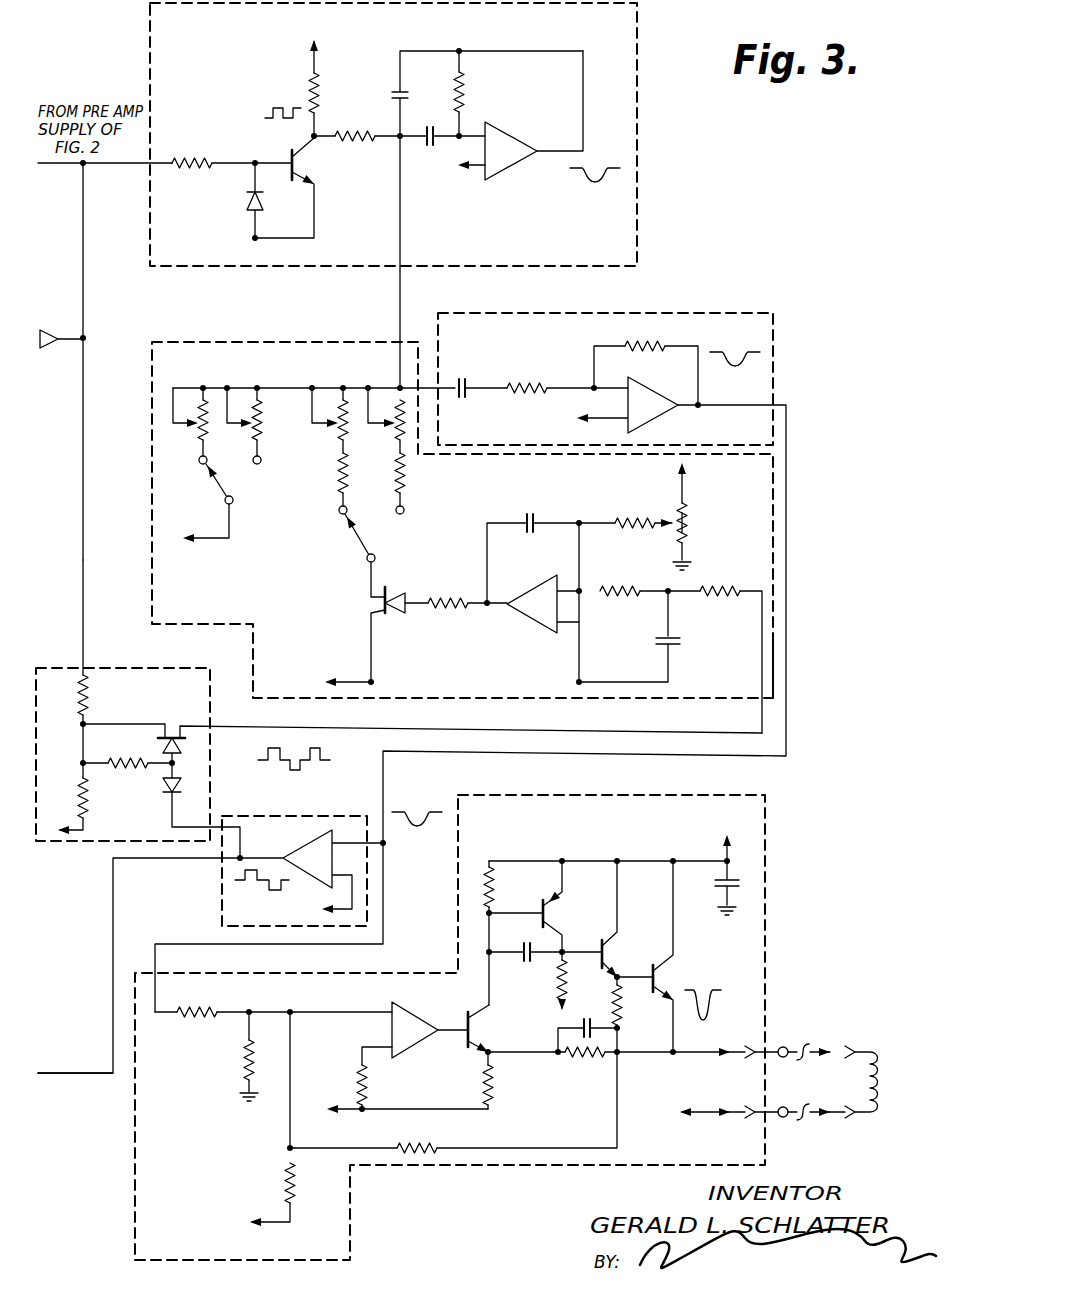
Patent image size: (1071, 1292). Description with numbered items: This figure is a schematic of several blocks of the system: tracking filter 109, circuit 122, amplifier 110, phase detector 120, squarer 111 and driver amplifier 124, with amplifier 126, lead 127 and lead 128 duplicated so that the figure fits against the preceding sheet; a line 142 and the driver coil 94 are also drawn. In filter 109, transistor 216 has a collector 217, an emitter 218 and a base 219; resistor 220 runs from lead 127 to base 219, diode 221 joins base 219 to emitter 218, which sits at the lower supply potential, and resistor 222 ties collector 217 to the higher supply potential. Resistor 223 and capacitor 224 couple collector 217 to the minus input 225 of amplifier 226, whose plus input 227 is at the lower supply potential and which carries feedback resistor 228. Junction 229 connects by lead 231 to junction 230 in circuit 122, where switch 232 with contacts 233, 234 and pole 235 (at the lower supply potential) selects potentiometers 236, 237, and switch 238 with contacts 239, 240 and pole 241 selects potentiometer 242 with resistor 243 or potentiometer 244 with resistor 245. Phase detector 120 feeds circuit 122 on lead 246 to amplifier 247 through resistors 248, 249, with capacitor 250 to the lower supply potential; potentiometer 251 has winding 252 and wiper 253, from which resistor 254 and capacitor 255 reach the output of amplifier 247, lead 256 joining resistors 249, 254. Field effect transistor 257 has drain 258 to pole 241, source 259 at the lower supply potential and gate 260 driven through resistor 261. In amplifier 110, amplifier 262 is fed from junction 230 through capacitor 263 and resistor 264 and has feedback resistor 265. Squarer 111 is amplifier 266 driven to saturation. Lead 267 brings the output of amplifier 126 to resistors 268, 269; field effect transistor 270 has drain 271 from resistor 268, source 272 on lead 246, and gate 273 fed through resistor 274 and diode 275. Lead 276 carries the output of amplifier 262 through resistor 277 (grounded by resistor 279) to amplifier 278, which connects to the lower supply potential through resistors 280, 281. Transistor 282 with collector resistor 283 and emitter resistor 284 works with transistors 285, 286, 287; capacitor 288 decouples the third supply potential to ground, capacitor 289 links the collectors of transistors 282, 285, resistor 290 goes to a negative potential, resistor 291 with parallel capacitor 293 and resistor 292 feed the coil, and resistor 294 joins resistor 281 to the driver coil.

The driver coil 94 is at (873, 1084).
The tracking filter 109 is at (650, 182).
The amplifier 110 is at (785, 322).
The squarer 111 is at (290, 812).
The phase detector 120 is at (135, 662).
The circuit 122 is at (250, 335).
The driver amplifier 124 is at (615, 793).
The amplifier 126 is at (45, 350).
The lead 127 is at (40, 172).
The lead 128 is at (62, 1075).
The line 142 is at (85, 240).
The transistor 216 is at (282, 155).
The collector 217 is at (305, 150).
The emitter 218 is at (311, 180).
The base 219 is at (272, 165).
The resistor 220 is at (195, 180).
The diode 221 is at (246, 197).
The resistor 222 is at (318, 85).
The resistor 223 is at (340, 130).
The capacitor 224 is at (445, 115).
The minus input 225 is at (483, 120).
The amplifier 226 is at (535, 131).
The plus input 227 is at (492, 170).
The feedback resistor 228 is at (465, 85).
The junction 229 is at (402, 140).
The junction 230 is at (398, 386).
The lead 231 is at (398, 226).
The single-pole, double-throw switch 232 is at (252, 509).
The contact 233 is at (200, 462).
The contact 234 is at (262, 460).
The pole 235 is at (230, 490).
The potentiometer 236 is at (206, 428).
The potentiometer 237 is at (264, 428).
The single-pole, double-throw switch 238 is at (348, 553).
The contact 239 is at (348, 509).
The contact 240 is at (405, 510).
The pole 241 is at (363, 541).
The potentiometer 242 is at (348, 428).
The resistor 243 is at (349, 470).
The potentiometer 244 is at (404, 440).
The resistor 245 is at (406, 485).
The lead 246 is at (772, 660).
The amplifier 247 is at (510, 584).
The resistor 248 is at (714, 589).
The resistor 249 is at (622, 585).
The capacitor 250 is at (685, 630).
The potentiometer 251 is at (700, 524).
The winding 252 is at (695, 498).
The wiper 253 is at (661, 518).
The resistor 254 is at (640, 500).
The capacitor 255 is at (548, 500).
The lead 256 is at (582, 540).
The field effect transistor 257 is at (418, 628).
The drain 258 is at (385, 587).
The source 259 is at (385, 610).
The gate 260 is at (440, 597).
The resistor 261 is at (463, 605).
The amplifier 262 is at (665, 423).
The capacitor 263 is at (458, 380).
The resistor 264 is at (526, 383).
The feedback resistor 265 is at (645, 342).
The amplifier 266 is at (306, 840).
The lead 267 is at (83, 626).
The resistor 268 is at (90, 705).
The resistor 269 is at (86, 806).
The field effect transistor 270 is at (150, 740).
The drain 271 is at (169, 736).
The source 272 is at (188, 740).
The gate 273 is at (178, 762).
The resistor 274 is at (110, 768).
The diode 275 is at (176, 795).
The lead 276 is at (200, 944).
The resistor 277 is at (205, 1005).
The amplifier 278 is at (405, 1005).
The resistor 279 is at (242, 1062).
The resistor 280 is at (368, 1075).
The resistor 281 is at (283, 1165).
The transistor 282 is at (460, 1060).
The collector resistor 283 is at (495, 882).
The emitter resistor 284 is at (495, 1075).
The transistor 285 is at (566, 905).
The transistor 286 is at (622, 950).
The transistor 287 is at (688, 970).
The capacitor 288 is at (733, 884).
The capacitor 289 is at (520, 957).
The resistor 290 is at (567, 972).
The resistor 291 is at (580, 1056).
The resistor 292 is at (622, 1008).
The capacitor 293 is at (575, 1030).
The resistor 294 is at (415, 1145).